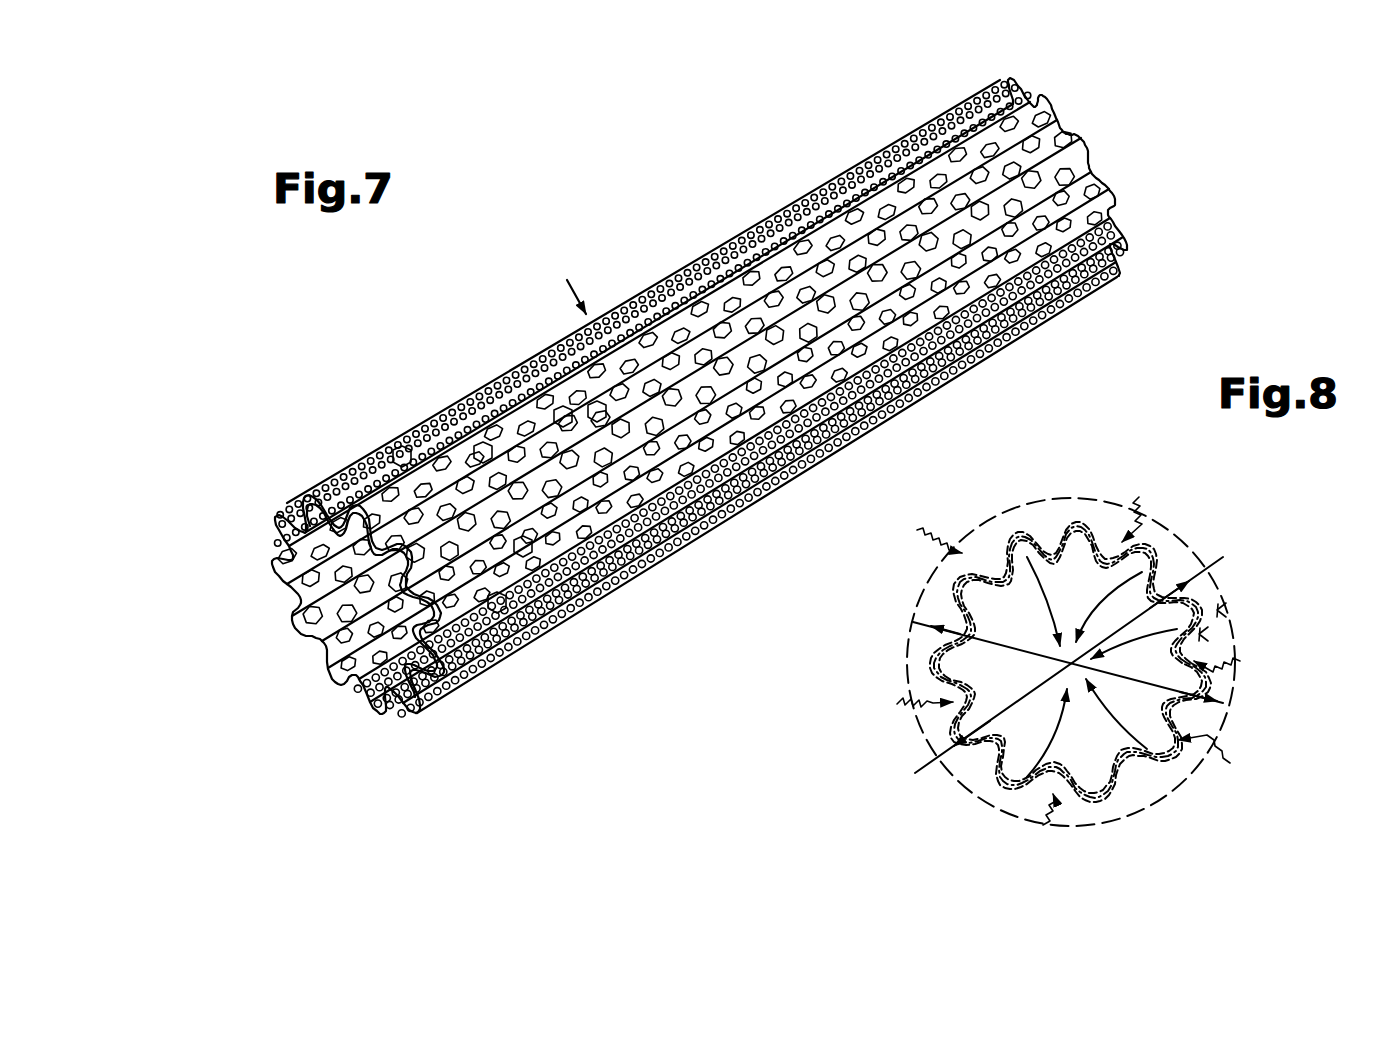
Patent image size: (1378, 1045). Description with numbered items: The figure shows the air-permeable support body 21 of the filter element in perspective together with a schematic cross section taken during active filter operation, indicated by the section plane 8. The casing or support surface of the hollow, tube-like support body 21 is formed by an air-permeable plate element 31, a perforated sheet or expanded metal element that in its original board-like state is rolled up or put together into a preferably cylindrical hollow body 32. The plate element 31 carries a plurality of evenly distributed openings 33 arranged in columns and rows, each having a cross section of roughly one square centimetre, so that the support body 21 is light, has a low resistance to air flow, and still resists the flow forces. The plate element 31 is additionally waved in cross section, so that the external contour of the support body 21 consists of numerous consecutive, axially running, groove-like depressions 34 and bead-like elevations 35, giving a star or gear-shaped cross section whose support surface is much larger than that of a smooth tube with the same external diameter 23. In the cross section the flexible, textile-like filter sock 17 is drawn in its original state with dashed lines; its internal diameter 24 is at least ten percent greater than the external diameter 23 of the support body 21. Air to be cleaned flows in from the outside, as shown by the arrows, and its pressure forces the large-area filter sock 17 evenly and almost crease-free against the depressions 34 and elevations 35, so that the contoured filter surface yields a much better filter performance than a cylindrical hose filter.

In FIG. 8, the cross-section plane 8 is at (1106, 494).
In FIG. 8, the filter sock 17 is at (1226, 611).
In FIG. 7, the support body 21 is at (364, 447).
In FIG. 8, the support body 21 is at (1047, 672).
In FIG. 7, the external diameter 23 is at (716, 531).
In FIG. 8, the external diameter 23 is at (953, 750).
In FIG. 8, the internal diameter 24 is at (1070, 663).
In FIG. 7, the plate element 31 is at (328, 686).
In FIG. 7, the hollow body 32 is at (316, 647).
In FIG. 7, the openings 33 is at (480, 458).
In FIG. 8, the openings 33 is at (1194, 596).
In FIG. 7, the depressions 34 is at (524, 550).
In FIG. 8, the depressions 34 is at (982, 558).
In FIG. 7, the elevations 35 is at (596, 411).
In FIG. 8, the elevations 35 is at (1011, 544).